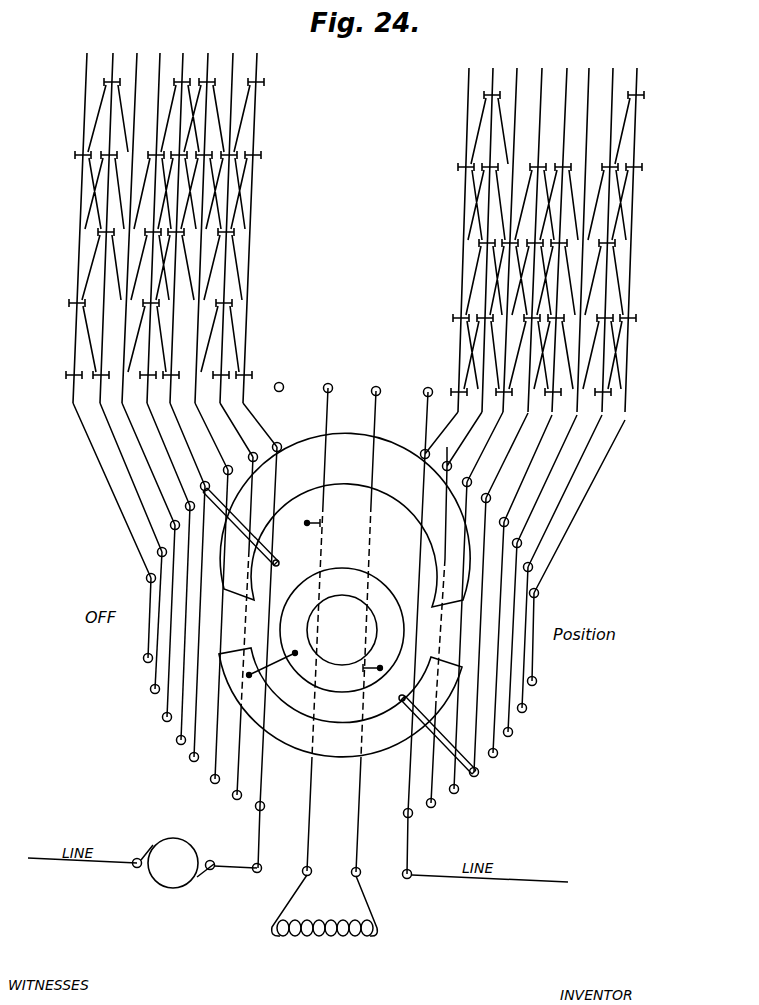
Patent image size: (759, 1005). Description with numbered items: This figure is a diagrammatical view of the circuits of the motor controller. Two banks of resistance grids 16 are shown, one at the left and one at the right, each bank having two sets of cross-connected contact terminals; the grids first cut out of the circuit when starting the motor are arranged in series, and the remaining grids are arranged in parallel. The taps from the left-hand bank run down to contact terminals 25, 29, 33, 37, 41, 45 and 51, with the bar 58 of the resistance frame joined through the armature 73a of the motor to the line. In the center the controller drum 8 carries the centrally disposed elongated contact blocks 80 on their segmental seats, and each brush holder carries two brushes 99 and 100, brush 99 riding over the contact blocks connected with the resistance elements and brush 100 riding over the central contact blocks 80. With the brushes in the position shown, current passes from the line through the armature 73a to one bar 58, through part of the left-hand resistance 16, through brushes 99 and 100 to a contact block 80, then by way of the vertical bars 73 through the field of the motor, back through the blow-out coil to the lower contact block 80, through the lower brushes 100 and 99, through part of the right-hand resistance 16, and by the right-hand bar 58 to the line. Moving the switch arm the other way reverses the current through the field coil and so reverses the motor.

The resistance grids 16 is at (355, 232).
The contact segment lead 25 is at (150, 590).
The contact segment lead 29 is at (157, 641).
The contact segment lead 33 is at (173, 563).
The contact segment lead 37 is at (188, 551).
The contact segment lead 41 is at (205, 522).
The contact segment lead 45 is at (229, 625).
The contact segment lead 51 is at (252, 626).
The vertical bar 58 is at (283, 462).
The vertical bar 73 is at (372, 435).
The armature 73a is at (145, 874).
The elongated contact block 80 is at (345, 520).
The controller drum ring 8 is at (292, 748).
The brush 99 is at (210, 489).
The brush 100 is at (266, 552).